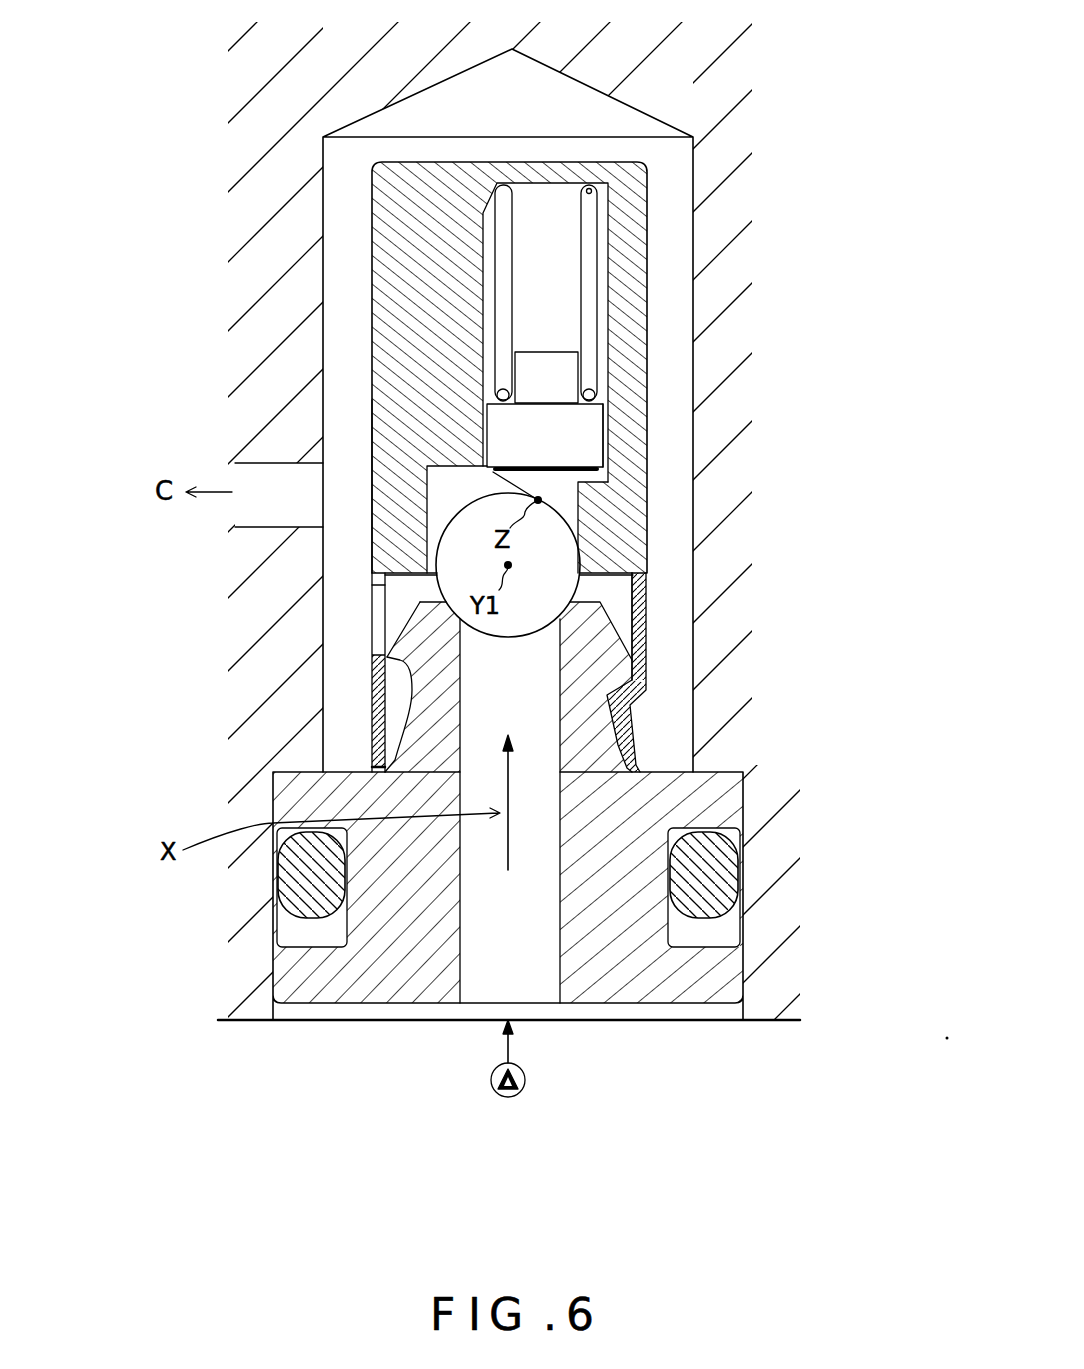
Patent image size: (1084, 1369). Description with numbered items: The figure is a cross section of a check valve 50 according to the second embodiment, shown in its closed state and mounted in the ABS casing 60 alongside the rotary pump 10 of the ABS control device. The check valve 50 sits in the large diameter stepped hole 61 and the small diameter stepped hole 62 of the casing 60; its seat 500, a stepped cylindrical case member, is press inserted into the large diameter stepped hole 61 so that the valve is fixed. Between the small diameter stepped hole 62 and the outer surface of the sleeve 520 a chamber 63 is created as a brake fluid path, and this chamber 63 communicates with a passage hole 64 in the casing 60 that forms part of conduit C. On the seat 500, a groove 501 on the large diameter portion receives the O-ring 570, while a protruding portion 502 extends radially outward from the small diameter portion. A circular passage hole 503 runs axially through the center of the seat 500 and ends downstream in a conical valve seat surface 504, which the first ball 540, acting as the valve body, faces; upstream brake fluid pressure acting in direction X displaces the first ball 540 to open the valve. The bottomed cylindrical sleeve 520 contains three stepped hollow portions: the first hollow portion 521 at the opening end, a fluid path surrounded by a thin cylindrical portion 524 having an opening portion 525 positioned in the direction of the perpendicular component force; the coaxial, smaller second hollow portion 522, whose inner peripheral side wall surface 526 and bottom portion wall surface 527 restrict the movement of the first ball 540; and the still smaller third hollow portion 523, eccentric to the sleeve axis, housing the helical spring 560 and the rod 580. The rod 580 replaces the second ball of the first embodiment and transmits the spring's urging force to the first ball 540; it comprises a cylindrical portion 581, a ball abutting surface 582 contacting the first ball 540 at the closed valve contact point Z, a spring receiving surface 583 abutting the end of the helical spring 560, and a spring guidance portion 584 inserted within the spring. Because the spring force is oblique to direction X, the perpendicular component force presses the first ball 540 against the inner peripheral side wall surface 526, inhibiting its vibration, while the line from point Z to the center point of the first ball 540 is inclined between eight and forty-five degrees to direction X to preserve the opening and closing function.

The rotary pump 10 is at (525, 1080).
The check valve 50 is at (669, 666).
The ABS casing 60 is at (293, 648).
The large diameter stepped hole 61 is at (273, 933).
The small diameter stepped hole 62 is at (320, 695).
The chamber 63 is at (343, 723).
The passage hole 64 is at (278, 463).
The seat 500 is at (742, 787).
The groove 501 is at (715, 925).
The protruding portion 502 is at (647, 683).
The passage hole 503 is at (482, 987).
The valve seat surface 504 is at (575, 604).
The sleeve 520 is at (640, 278).
The first hollow portion 521 is at (372, 572).
The second hollow portion 522 is at (438, 477).
The third hollow portion 523 is at (553, 242).
The cylindrical portion 524 is at (372, 742).
The opening portion 525 is at (372, 632).
The inner peripheral side wall surface 526 is at (372, 483).
The bottom portion wall surface 527 is at (453, 463).
The first ball 540 is at (537, 537).
The helical spring 560 is at (647, 178).
The O-ring 570 is at (712, 858).
The rod 580 is at (600, 410).
The cylindrical portion 581 is at (576, 431).
The ball abutting surface 582 is at (598, 470).
The spring receiving surface 583 is at (553, 400).
The spring guidance portion 584 is at (550, 366).